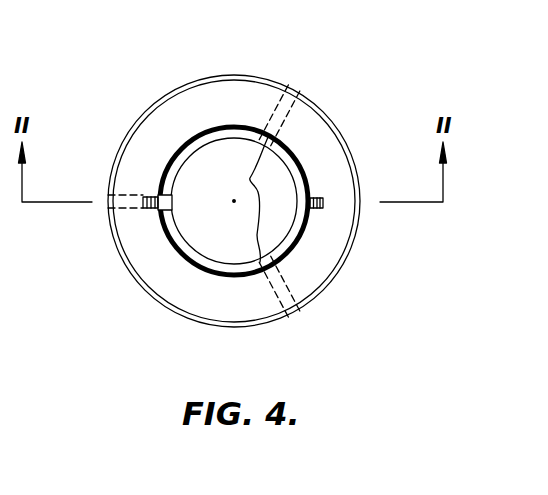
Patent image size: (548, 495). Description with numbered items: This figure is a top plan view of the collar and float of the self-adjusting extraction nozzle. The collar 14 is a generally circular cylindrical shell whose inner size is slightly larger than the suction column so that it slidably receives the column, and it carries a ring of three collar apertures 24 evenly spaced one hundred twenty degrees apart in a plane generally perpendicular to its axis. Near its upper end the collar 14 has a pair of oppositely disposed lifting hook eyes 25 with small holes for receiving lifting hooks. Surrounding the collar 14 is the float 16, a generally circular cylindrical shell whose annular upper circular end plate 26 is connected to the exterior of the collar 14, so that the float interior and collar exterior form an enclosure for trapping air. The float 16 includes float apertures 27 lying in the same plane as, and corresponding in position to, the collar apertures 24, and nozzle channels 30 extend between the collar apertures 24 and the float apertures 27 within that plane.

The collar 14 is at (188, 260).
The float 16 is at (187, 82).
The collar apertures 24 is at (174, 200).
The lifting hook eyes 25 is at (320, 208).
The upper circular end plate 26 is at (251, 107).
The float apertures 27 is at (287, 96).
The nozzle channels 30 is at (282, 127).